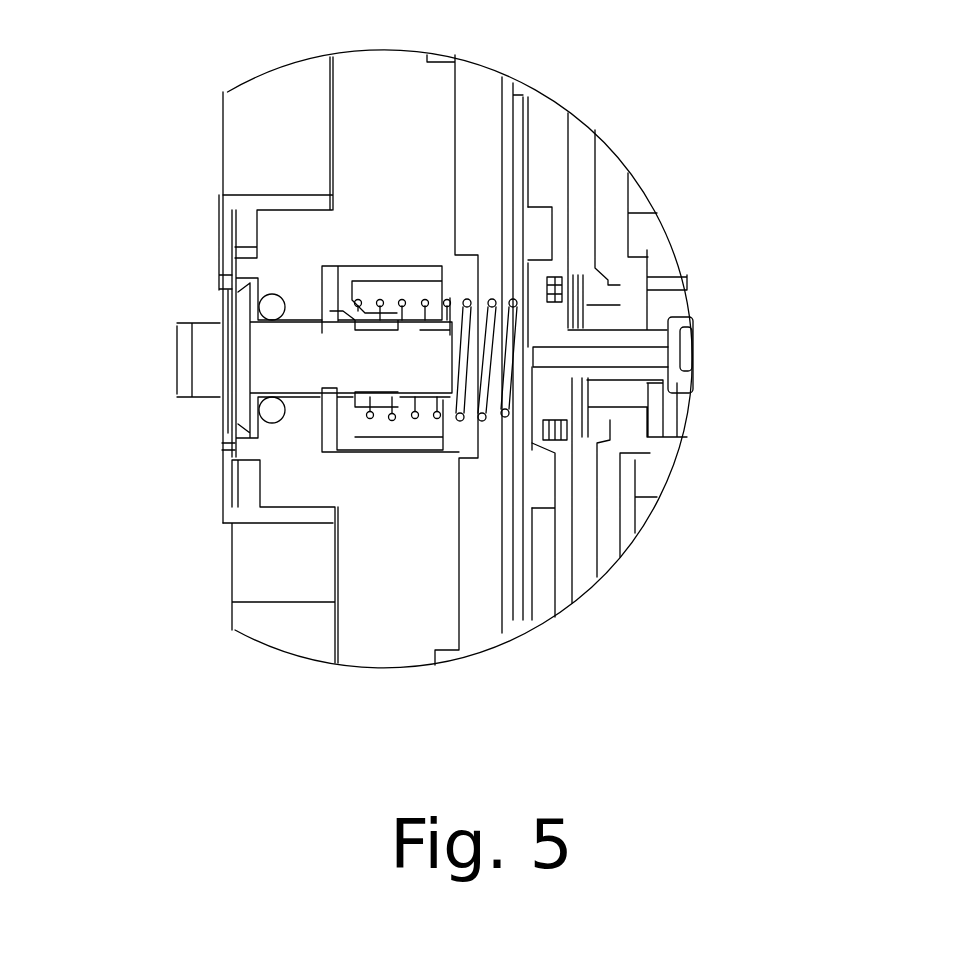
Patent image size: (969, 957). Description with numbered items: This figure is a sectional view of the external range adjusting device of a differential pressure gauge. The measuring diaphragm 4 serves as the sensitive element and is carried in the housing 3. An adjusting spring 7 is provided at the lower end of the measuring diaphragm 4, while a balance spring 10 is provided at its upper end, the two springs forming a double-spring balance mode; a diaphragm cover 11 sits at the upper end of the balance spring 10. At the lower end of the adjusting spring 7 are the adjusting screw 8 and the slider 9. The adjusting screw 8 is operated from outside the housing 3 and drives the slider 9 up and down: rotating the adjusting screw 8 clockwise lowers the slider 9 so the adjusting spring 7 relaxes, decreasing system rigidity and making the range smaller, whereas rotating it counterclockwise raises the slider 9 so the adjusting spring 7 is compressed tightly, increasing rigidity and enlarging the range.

The housing 3 is at (427, 182).
The measuring diaphragm 4 is at (557, 202).
The adjusting spring 7 is at (440, 312).
The adjusting screw 8 is at (300, 353).
The slider 9 is at (342, 450).
The balance spring 10 is at (577, 310).
The diaphragm cover 11 is at (627, 423).